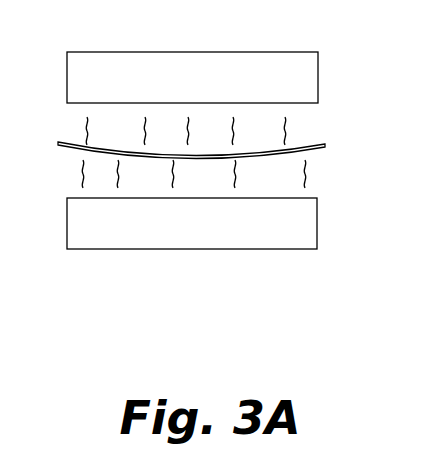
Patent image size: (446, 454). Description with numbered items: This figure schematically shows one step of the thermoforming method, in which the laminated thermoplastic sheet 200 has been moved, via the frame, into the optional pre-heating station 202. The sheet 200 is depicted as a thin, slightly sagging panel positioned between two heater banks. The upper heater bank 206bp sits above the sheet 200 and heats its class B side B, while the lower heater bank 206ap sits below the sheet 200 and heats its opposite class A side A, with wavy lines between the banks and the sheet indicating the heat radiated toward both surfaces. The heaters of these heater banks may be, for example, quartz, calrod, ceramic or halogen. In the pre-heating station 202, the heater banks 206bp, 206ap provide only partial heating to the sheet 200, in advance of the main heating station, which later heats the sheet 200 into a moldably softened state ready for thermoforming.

The pre-heating station 202 is at (351, 108).
The heater bank 206bp is at (300, 52).
The heater bank 206ap is at (222, 250).
The laminated thermoplastic sheet 200 is at (305, 152).
The class A side A is at (65, 152).
The class B side B is at (71, 143).